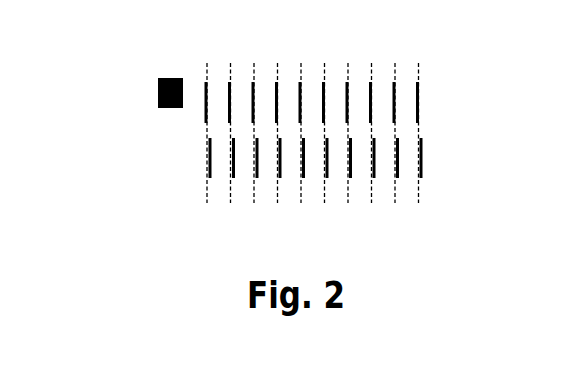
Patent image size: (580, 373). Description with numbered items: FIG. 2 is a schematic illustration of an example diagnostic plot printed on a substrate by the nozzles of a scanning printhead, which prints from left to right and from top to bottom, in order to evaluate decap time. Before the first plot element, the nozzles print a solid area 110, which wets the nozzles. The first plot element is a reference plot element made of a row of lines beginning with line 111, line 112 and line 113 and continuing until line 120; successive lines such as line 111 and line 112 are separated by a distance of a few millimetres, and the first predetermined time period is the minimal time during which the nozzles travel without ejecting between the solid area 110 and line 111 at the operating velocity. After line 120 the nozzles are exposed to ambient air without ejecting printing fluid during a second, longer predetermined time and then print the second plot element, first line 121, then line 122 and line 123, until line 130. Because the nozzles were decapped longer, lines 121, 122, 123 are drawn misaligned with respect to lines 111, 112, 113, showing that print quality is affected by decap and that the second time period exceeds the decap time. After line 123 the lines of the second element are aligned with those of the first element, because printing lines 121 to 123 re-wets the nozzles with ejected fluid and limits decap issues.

The solid area 110 is at (158, 95).
The line 111 is at (205, 90).
The line 112 is at (229, 95).
The line 113 is at (254, 97).
The line 120 is at (420, 98).
The line 121 is at (207, 158).
The line 122 is at (230, 175).
The line 123 is at (255, 175).
The line 130 is at (421, 158).